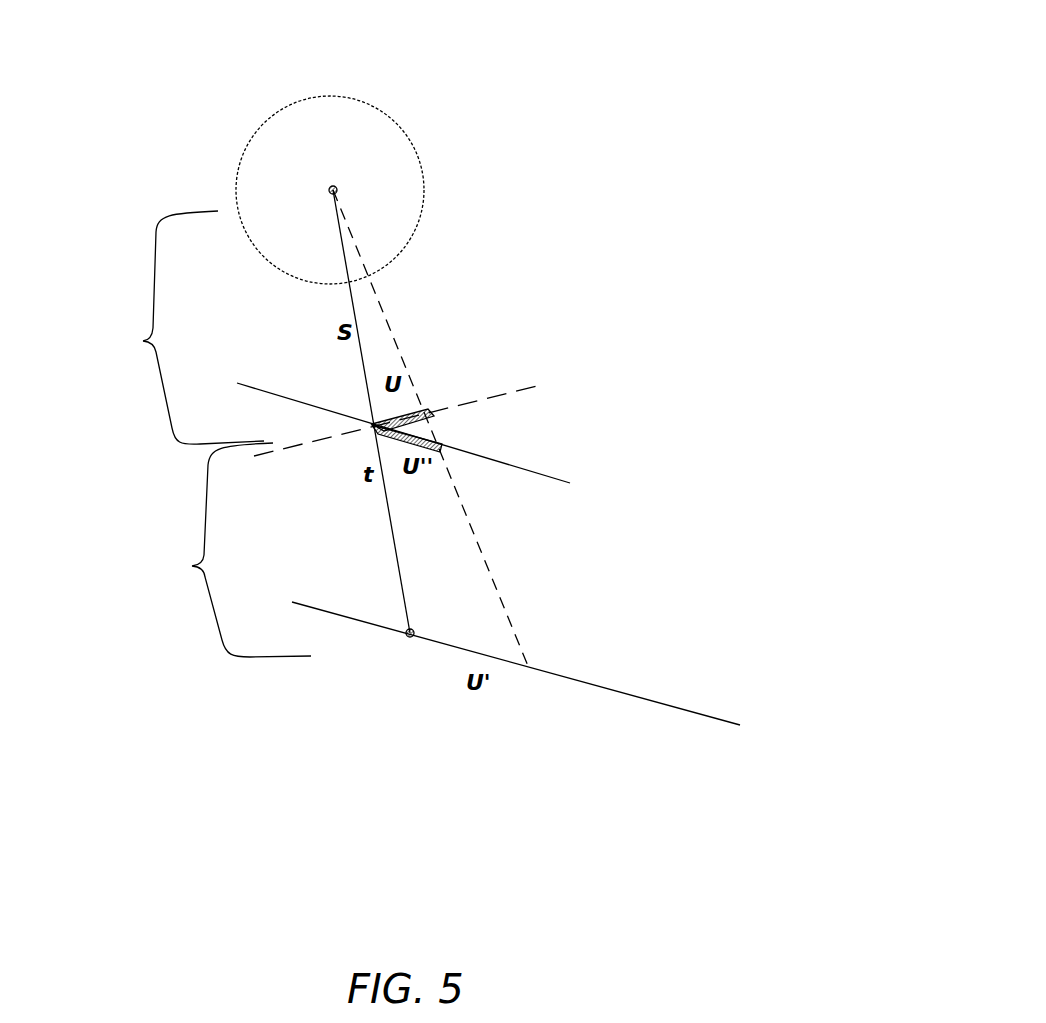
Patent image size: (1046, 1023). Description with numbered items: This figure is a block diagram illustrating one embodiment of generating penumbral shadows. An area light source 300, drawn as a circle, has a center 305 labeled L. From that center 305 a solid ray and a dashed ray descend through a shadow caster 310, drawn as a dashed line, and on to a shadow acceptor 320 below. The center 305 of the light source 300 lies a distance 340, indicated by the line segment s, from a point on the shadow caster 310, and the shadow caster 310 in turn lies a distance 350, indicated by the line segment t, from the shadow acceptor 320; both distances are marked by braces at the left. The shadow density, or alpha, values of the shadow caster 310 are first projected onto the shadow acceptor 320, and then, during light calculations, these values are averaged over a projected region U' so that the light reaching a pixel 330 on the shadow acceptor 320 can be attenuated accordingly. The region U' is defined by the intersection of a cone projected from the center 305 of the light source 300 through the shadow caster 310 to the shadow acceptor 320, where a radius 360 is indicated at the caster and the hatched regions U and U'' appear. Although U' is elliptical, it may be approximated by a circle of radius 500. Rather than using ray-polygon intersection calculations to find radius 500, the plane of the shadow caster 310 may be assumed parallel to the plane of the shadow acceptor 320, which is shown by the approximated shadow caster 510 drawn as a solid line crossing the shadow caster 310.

The light source 300 is at (252, 130).
The center 305 is at (339, 183).
The shadow caster 310 is at (538, 386).
The shadow acceptor 320 is at (746, 738).
The pixel 330 is at (398, 647).
The distance 340 is at (154, 327).
The distance 350 is at (204, 550).
The radius 360 is at (402, 414).
The radius 500 is at (504, 673).
The approximated shadow caster 510 is at (584, 486).